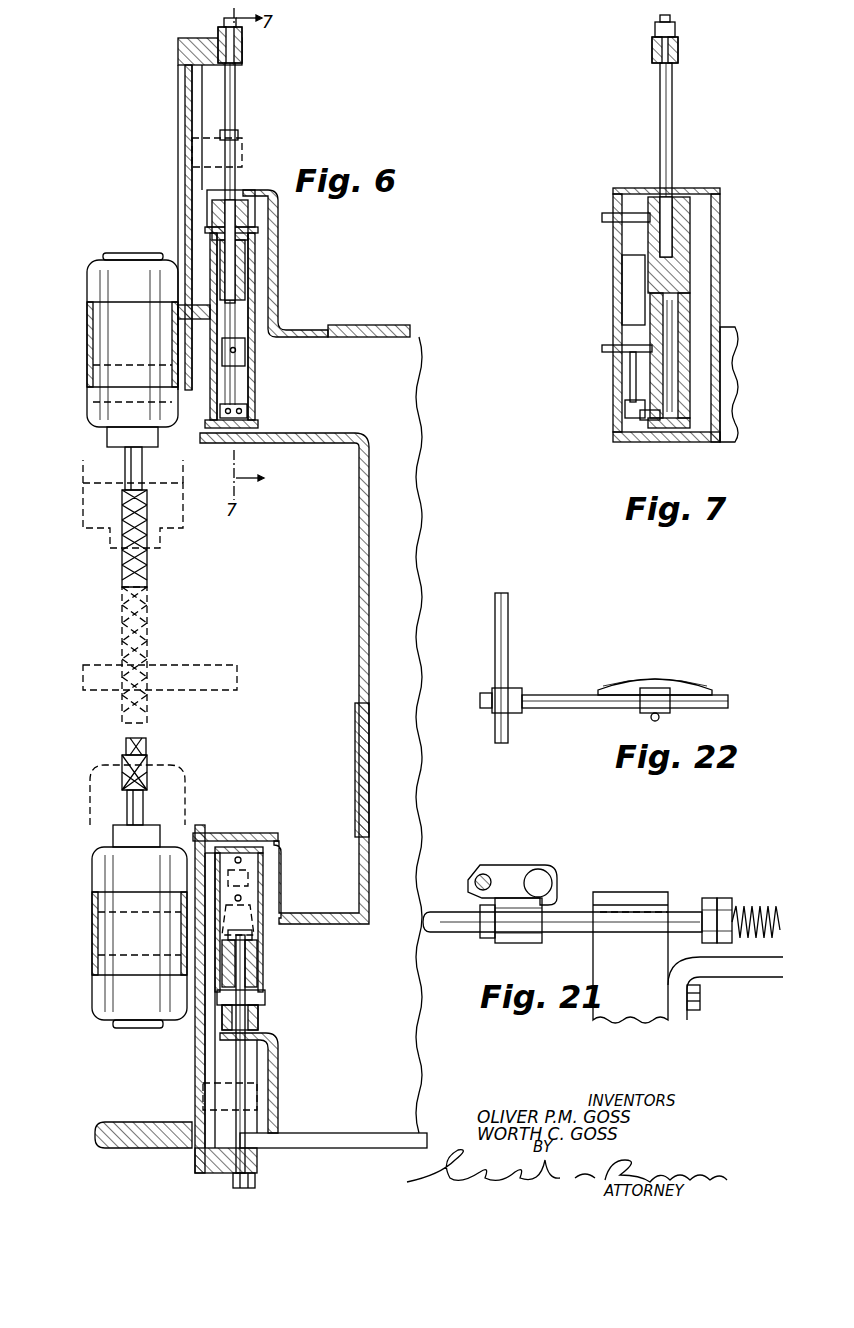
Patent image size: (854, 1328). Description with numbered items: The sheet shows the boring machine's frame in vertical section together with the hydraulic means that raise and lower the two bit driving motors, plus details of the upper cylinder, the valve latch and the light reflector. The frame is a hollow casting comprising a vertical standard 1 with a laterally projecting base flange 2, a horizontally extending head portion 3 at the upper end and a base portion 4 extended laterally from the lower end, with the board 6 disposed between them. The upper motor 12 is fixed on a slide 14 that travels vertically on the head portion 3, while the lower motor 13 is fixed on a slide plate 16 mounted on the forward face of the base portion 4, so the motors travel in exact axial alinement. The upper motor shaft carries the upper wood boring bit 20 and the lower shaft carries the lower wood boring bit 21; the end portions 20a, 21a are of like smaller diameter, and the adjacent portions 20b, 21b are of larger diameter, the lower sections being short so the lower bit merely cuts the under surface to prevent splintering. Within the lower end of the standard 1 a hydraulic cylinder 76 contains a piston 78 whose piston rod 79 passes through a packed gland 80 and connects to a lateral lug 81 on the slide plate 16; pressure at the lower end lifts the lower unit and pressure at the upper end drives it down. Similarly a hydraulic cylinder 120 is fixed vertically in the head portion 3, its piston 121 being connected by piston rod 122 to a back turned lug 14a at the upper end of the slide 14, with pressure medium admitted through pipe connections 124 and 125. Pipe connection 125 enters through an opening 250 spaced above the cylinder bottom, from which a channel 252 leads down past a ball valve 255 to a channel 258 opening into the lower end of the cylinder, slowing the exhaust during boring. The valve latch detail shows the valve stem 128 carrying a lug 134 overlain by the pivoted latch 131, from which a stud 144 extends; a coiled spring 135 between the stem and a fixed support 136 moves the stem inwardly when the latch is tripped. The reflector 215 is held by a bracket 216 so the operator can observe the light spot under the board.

In FIG. 6, the vertical standard 1 is at (359, 545).
In FIG. 6, the base flange 2 is at (110, 1122).
In FIG. 6, the head portion 3 is at (360, 330).
In FIG. 7, the head portion 3 is at (735, 378).
In FIG. 6, the base portion 4 is at (255, 833).
In FIG. 6, the board 6 is at (237, 665).
In FIG. 6, the upper motor 12 is at (87, 307).
In FIG. 6, the lower motor 13 is at (92, 890).
In FIG. 6, the slide 14 is at (178, 116).
In FIG. 6, the back turned lug 14a is at (242, 50).
In FIG. 7, the back turned lug 14a is at (678, 50).
In FIG. 6, the slide plate 16 is at (195, 1053).
In FIG. 6, the upper wood boring bit 20 is at (125, 485).
In FIG. 6, the end portion of upper bit 20a is at (150, 612).
In FIG. 6, the larger diameter portion of upper bit 20b is at (150, 572).
In FIG. 6, the lower wood boring bit 21 is at (150, 797).
In FIG. 6, the end portion of lower bit 21a is at (150, 742).
In FIG. 6, the larger diameter portion of lower bit 21b is at (150, 768).
In FIG. 6, the hydraulic cylinder 76 is at (262, 932).
In FIG. 6, the piston 78 is at (262, 964).
In FIG. 6, the piston rod 79 is at (245, 1058).
In FIG. 6, the packed gland 80 is at (262, 1006).
In FIG. 6, the lateral lug 81 is at (255, 1168).
In FIG. 6, the hydraulic cylinder 120 is at (255, 318).
In FIG. 7, the hydraulic cylinder 120 is at (690, 313).
In FIG. 6, the piston 121 is at (255, 262).
In FIG. 7, the piston 121 is at (690, 272).
In FIG. 6, the piston rod 122 is at (236, 103).
In FIG. 7, the piston rod 122 is at (672, 113).
In FIG. 7, the pipe connection 124 is at (605, 214).
In FIG. 7, the pipe connection 125 is at (610, 352).
In FIG. 21, the valve stem 128 is at (570, 912).
In FIG. 21, the latch 131 is at (510, 870).
In FIG. 21, the lug 134 is at (508, 920).
In FIG. 21, the coiled spring 135 is at (746, 908).
In FIG. 21, the fixed support 136 is at (735, 978).
In FIG. 21, the stud 144 is at (478, 877).
In FIG. 22, the reflector 215 is at (668, 678).
In FIG. 22, the bracket 216 is at (508, 648).
In FIG. 6, the opening 250 is at (247, 352).
In FIG. 7, the opening 250 is at (622, 318).
In FIG. 7, the channel 252 is at (628, 390).
In FIG. 7, the ball valve 255 is at (630, 410).
In FIG. 6, the channel 258 is at (250, 413).
In FIG. 7, the channel 258 is at (648, 422).